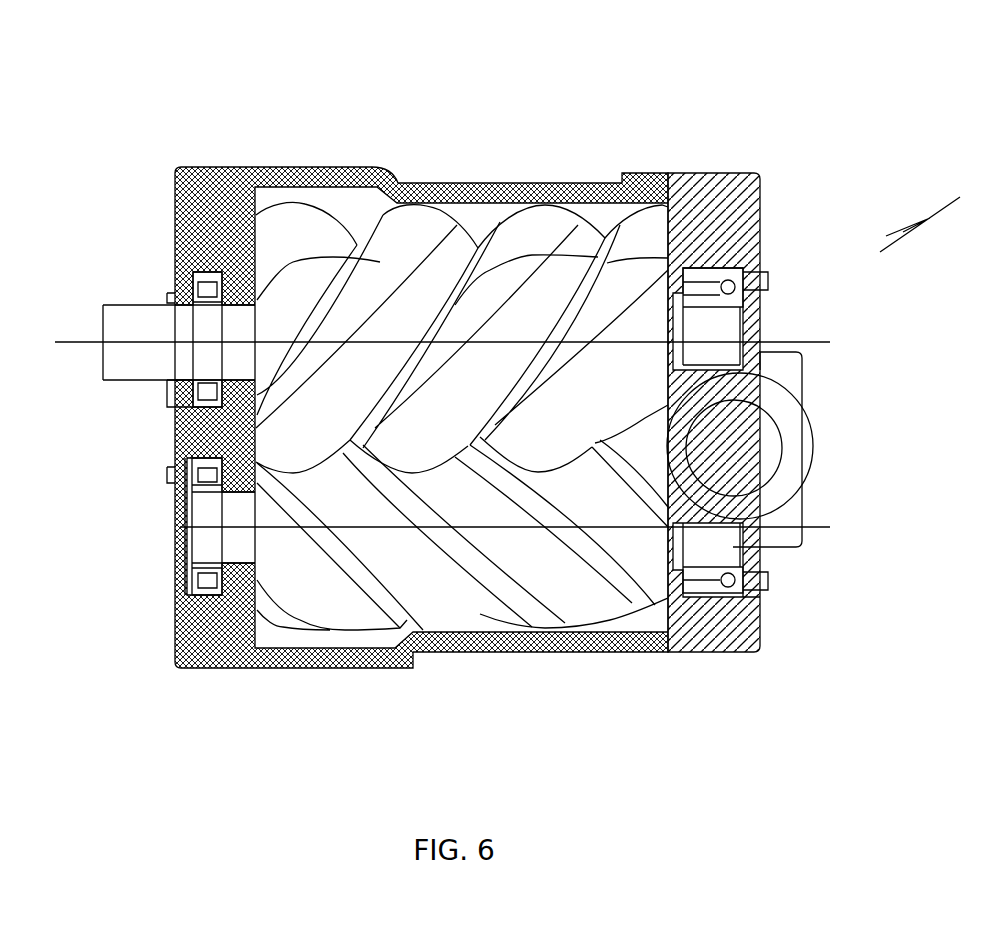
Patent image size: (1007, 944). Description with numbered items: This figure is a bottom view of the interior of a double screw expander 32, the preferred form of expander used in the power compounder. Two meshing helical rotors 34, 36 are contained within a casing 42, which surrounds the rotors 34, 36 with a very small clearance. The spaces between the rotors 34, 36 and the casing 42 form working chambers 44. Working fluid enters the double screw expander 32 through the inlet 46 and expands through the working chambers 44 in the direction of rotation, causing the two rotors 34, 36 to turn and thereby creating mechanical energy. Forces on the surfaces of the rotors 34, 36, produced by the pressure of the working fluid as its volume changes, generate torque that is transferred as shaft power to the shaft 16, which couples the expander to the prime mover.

The shaft 16 is at (137, 323).
The double screw expander 32 is at (934, 217).
The rotor 34 is at (530, 228).
The rotor 36 is at (497, 622).
The casing 42 is at (327, 165).
The working chambers 44 is at (605, 218).
The inlet 46 is at (752, 447).